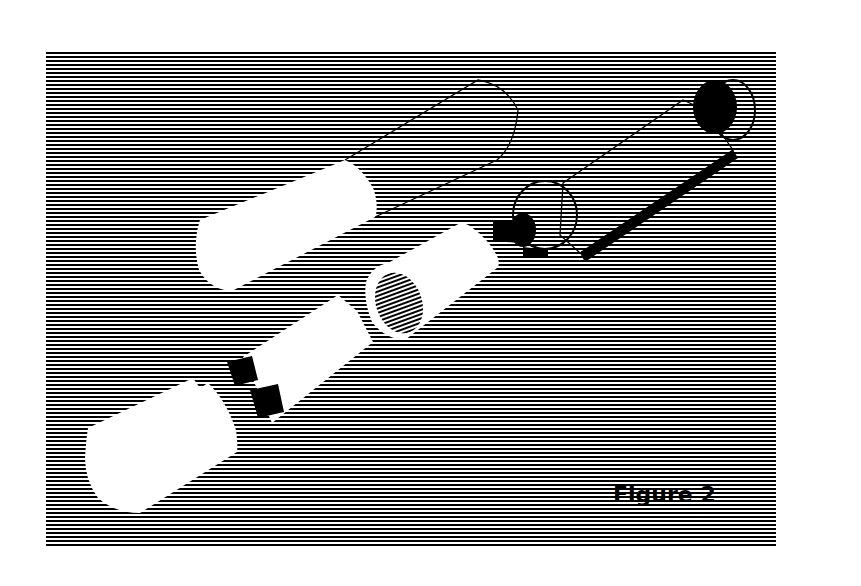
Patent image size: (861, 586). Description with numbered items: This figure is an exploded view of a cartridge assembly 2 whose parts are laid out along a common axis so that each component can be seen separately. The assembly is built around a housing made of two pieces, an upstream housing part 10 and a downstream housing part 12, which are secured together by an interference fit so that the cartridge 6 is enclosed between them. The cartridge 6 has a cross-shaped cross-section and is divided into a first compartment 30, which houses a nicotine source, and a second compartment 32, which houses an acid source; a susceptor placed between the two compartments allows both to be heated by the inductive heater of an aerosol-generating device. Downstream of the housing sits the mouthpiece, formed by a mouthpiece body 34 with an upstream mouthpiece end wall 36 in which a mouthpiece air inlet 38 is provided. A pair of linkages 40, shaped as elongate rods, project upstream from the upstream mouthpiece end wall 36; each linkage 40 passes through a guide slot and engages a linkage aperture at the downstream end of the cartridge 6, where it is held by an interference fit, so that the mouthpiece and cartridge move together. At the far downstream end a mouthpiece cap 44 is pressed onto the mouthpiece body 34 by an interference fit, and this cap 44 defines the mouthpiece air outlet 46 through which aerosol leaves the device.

The cartridge assembly 2 is at (270, 170).
The cartridge 6 is at (325, 362).
The upstream housing part 10 is at (128, 404).
The downstream housing part 12 is at (470, 305).
The first compartment 30 is at (253, 370).
The second compartment 32 is at (253, 403).
The mouthpiece body 34 is at (630, 203).
The upstream mouthpiece end wall 36 is at (542, 218).
The mouthpiece air inlet 38 is at (523, 213).
The linkages 40 is at (492, 228).
The mouthpiece cap 44 is at (733, 90).
The mouthpiece air outlet 46 is at (710, 123).